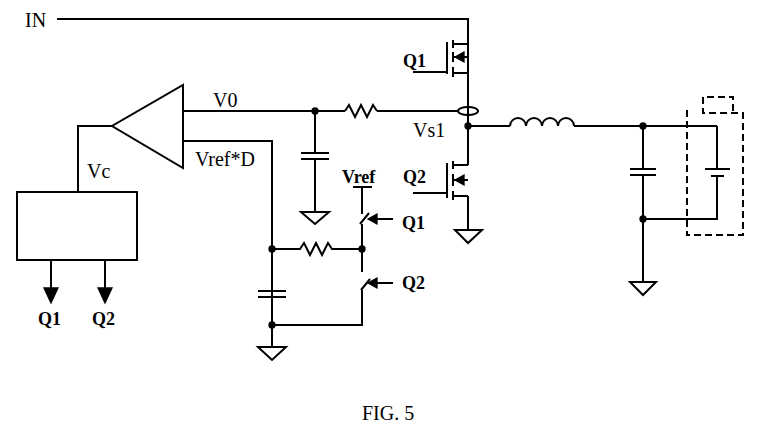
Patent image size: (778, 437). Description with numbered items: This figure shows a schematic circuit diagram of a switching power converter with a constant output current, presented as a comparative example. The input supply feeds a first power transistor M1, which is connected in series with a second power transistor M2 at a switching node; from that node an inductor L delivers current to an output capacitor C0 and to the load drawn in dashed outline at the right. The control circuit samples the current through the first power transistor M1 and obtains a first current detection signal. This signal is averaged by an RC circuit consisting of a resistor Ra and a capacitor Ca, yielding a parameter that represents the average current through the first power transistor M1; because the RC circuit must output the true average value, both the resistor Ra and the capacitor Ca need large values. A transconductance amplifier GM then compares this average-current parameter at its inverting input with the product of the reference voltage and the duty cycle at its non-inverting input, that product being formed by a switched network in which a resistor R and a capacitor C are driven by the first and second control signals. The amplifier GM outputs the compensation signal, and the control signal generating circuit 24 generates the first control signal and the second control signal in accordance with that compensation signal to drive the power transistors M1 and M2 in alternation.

The control signal generating circuit 24 is at (91, 236).
The transconductance amplifier GM is at (147, 126).
The resistor Ra is at (401, 101).
The capacitor Ca is at (306, 167).
The capacitor C is at (255, 301).
The resistor R is at (317, 264).
The first power transistor M1 is at (461, 58).
The second power transistor M2 is at (461, 180).
The inductor L is at (592, 109).
The output capacitor C0 is at (626, 210).